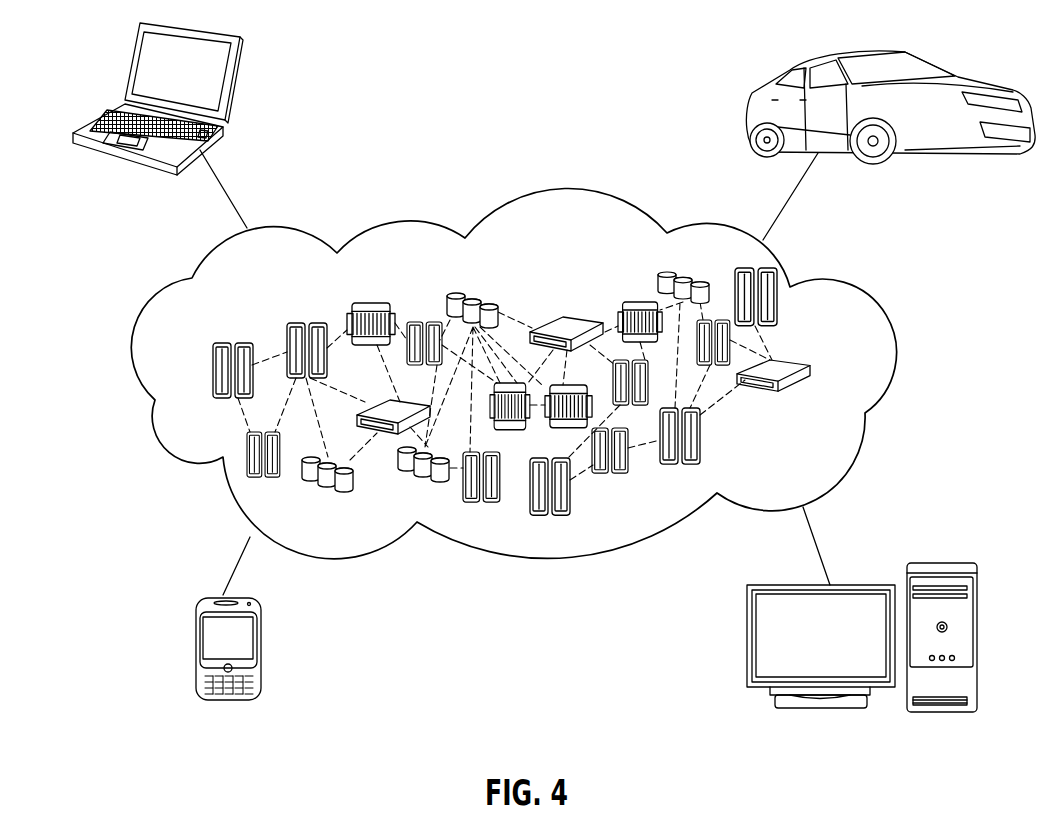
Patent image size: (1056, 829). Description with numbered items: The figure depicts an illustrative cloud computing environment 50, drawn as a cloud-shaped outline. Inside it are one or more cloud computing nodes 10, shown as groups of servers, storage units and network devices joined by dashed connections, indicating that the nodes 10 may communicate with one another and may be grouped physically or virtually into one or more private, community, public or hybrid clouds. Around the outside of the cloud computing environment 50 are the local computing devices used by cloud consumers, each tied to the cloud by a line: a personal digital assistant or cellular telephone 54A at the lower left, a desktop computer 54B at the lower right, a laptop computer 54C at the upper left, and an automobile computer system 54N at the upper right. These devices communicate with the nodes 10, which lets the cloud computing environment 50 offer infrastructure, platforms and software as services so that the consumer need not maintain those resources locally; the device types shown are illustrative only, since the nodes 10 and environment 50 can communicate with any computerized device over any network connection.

The cloud computing nodes 10 is at (847, 373).
The cloud computing environment 50 is at (870, 295).
The personal digital assistant or cellular telephone 54A is at (199, 653).
The desktop computer 54B is at (943, 562).
The laptop computer 54C is at (237, 84).
The automobile computer system 54N is at (753, 90).